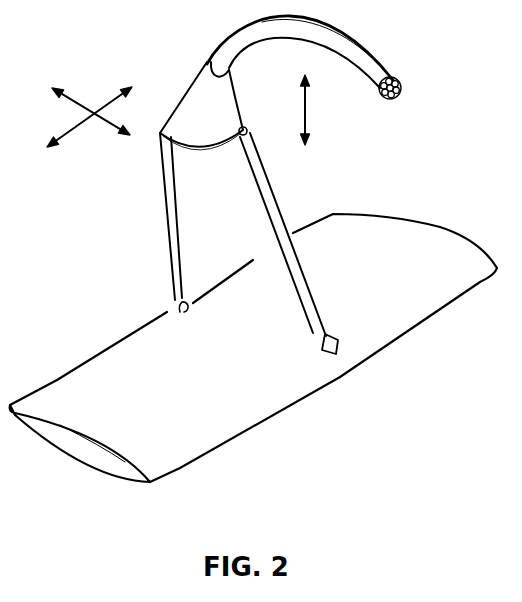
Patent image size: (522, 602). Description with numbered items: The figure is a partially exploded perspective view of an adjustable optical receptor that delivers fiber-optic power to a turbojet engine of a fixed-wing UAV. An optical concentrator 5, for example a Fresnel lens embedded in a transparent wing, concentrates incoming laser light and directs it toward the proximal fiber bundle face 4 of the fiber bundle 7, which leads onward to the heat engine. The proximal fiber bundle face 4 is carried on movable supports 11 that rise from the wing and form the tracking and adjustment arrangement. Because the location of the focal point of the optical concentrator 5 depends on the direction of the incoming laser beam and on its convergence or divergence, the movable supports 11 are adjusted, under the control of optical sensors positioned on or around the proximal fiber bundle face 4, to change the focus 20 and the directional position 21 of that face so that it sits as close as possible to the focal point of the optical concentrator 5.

The proximal fiber bundle face 4 is at (193, 107).
The optical concentrator 5 is at (223, 430).
The fiber bundle 7 is at (383, 67).
The movable supports 11 is at (290, 268).
The focus 20 is at (319, 110).
The directional position 21 is at (89, 112).